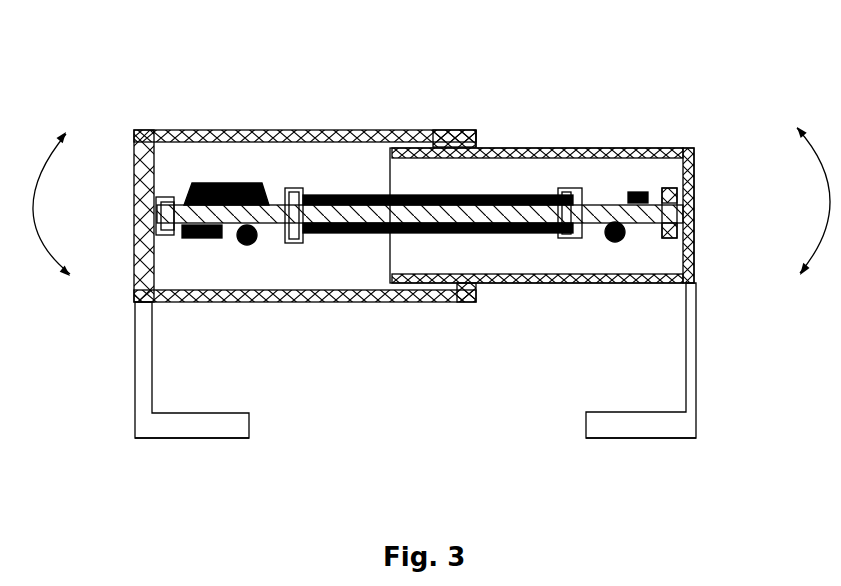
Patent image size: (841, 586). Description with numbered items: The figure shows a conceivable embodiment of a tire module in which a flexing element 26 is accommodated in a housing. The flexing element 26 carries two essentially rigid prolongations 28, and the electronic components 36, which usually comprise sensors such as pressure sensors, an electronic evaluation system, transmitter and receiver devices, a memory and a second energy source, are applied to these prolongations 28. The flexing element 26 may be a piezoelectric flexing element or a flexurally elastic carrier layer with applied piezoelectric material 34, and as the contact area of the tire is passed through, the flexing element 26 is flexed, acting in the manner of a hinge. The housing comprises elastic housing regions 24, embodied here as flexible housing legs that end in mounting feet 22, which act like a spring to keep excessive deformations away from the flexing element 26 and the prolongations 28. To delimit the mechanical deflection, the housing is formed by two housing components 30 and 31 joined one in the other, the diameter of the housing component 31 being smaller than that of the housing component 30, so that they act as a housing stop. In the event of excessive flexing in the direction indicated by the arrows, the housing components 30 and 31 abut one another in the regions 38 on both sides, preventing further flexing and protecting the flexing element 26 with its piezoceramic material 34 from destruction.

The mounting foot 22 is at (175, 440).
The elastic housing regions 24 is at (142, 378).
The flexing element 26 is at (527, 190).
The prolongations 28 is at (150, 218).
The housing component 30 is at (470, 131).
The housing component 31 is at (455, 147).
The piezoelectric material 34 is at (394, 195).
The electronic components 36 is at (235, 183).
The regions 38 is at (453, 147).